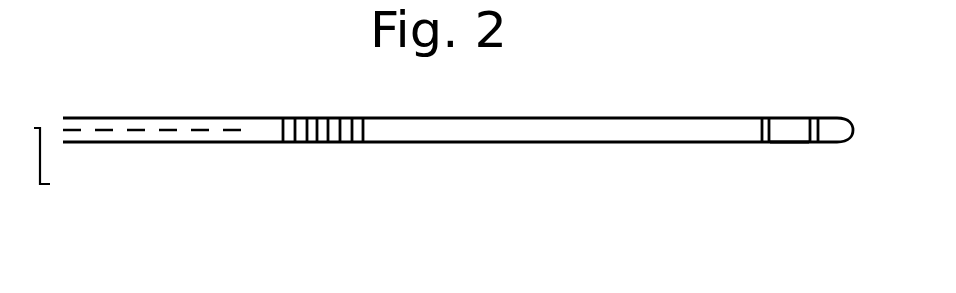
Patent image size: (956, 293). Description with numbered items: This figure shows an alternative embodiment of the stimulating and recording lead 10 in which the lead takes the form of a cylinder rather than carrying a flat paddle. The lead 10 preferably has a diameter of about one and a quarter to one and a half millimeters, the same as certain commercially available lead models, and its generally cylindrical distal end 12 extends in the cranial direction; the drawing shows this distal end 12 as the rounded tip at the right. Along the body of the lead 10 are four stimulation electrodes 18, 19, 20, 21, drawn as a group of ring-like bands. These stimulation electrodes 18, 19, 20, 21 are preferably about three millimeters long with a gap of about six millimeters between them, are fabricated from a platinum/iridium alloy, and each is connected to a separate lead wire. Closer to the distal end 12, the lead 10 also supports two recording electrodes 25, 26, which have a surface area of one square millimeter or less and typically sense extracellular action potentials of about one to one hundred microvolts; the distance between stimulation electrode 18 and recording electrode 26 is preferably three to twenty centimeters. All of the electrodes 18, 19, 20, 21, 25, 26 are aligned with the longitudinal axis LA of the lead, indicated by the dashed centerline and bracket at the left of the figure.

The stimulating and recording lead 10 is at (607, 142).
The distal end 12 is at (790, 145).
The stimulation electrode 18 is at (360, 117).
The stimulation electrode 19 is at (336, 143).
The stimulation electrode 20 is at (305, 143).
The stimulation electrode 21 is at (283, 117).
The recording electrode 25 is at (815, 117).
The recording electrode 26 is at (766, 117).
The longitudinal axis LA is at (57, 163).